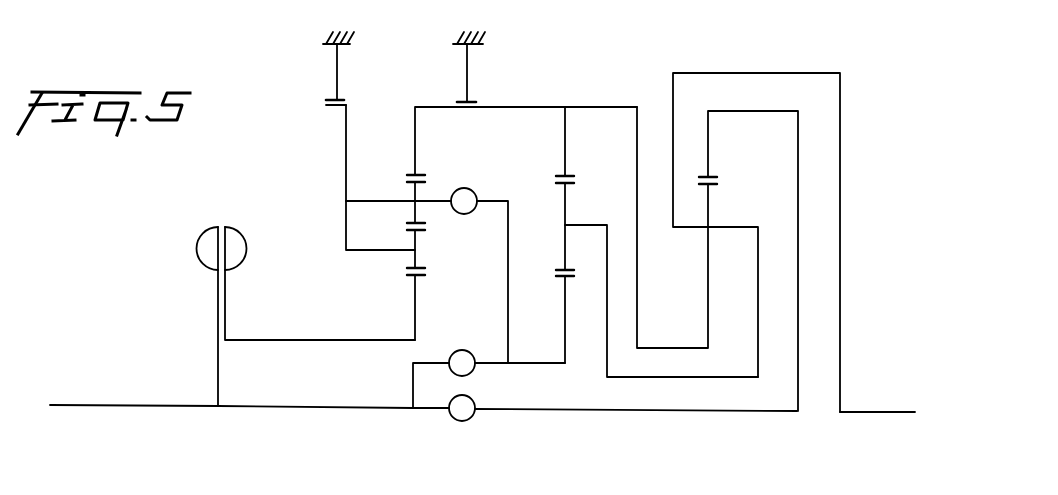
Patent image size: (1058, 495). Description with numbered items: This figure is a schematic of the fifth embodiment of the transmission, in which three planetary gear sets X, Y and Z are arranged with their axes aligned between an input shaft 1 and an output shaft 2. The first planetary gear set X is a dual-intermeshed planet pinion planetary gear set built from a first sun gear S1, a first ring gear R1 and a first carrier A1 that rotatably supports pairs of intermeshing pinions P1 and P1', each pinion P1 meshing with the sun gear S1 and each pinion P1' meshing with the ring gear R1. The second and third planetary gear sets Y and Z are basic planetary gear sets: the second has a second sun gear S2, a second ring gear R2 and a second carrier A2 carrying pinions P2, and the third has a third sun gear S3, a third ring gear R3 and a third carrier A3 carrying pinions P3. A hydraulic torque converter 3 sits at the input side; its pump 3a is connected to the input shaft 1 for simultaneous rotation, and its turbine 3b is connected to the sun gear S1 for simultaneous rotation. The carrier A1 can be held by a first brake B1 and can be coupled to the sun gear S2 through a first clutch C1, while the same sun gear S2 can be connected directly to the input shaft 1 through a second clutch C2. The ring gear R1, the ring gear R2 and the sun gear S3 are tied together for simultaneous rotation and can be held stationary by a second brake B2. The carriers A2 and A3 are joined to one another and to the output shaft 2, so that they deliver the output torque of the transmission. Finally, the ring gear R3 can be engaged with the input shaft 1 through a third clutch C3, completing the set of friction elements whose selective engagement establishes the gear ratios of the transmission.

The input shaft 1 is at (137, 406).
The output shaft 2 is at (868, 413).
The hydraulic torque converter 3 is at (239, 226).
The pump 3a is at (208, 265).
The turbine 3b is at (235, 265).
The first brake B1 is at (333, 98).
The second brake B2 is at (473, 100).
The first clutch C1 is at (475, 192).
The second clutch C2 is at (472, 350).
The third clutch C3 is at (476, 400).
The first ring gear R1 is at (415, 141).
The second ring gear R2 is at (565, 142).
The third ring gear R3 is at (708, 149).
The pinion P1 is at (437, 263).
The pinion P1' is at (395, 196).
The pinion P2 is at (565, 203).
The pinion P3 is at (708, 250).
The first sun gear S1 is at (414, 311).
The second sun gear S2 is at (565, 334).
The third sun gear S3 is at (708, 316).
The first carrier A1 is at (345, 229).
The second carrier A2 is at (585, 225).
The third carrier A3 is at (758, 248).
The first planetary gear set X is at (440, 320).
The second planetary gear set Y is at (573, 356).
The third planetary gear set Z is at (730, 349).